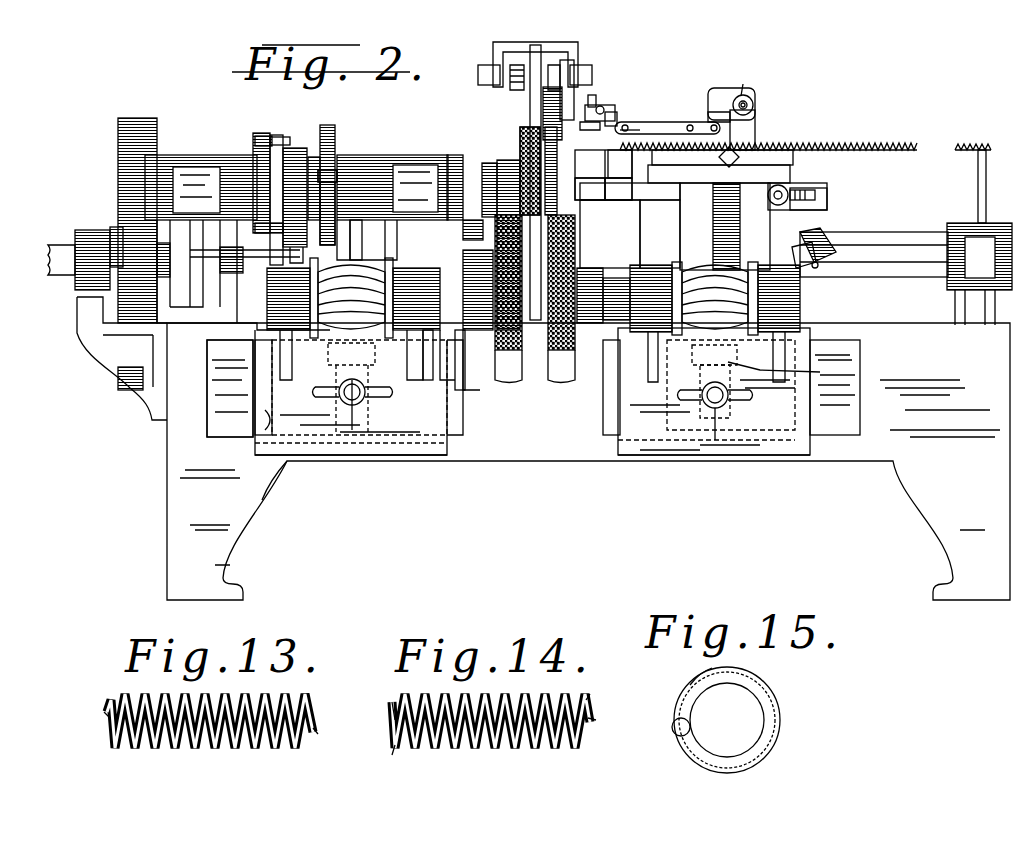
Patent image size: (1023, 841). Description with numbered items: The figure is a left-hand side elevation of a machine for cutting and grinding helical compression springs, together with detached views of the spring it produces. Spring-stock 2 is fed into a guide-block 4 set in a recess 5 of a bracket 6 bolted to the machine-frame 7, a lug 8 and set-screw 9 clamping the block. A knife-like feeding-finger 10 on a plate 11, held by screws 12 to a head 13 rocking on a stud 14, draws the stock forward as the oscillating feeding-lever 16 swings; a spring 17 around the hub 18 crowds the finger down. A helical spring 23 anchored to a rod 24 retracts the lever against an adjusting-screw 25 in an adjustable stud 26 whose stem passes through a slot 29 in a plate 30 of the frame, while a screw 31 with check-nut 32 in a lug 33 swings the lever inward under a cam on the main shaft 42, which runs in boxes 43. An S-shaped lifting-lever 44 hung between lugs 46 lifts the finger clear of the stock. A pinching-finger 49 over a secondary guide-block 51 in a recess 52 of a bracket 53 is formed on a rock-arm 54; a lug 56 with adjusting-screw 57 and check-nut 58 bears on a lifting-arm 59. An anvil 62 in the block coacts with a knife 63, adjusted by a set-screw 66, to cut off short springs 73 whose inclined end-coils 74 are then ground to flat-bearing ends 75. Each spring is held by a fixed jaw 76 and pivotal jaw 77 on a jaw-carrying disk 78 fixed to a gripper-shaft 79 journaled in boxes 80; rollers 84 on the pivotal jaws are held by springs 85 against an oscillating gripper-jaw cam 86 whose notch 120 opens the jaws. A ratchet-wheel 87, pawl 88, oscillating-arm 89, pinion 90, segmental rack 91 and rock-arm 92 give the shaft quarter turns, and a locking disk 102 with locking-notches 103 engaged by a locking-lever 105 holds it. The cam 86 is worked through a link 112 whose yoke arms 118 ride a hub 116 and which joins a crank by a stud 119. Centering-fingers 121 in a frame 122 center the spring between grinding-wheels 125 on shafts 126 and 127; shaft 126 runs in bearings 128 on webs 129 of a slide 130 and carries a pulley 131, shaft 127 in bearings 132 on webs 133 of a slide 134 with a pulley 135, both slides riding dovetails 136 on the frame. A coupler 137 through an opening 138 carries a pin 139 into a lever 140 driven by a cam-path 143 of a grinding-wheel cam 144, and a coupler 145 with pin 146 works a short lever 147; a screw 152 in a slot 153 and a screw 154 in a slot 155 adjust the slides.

In FIG. 2, the spring-stock 2 is at (820, 145).
In FIG. 2, the guide-block 4 is at (795, 157).
In FIG. 2, the recess 5 is at (792, 172).
In FIG. 2, the bracket 6 is at (725, 226).
In FIG. 2, the machine-frame 7 is at (900, 322).
In FIG. 2, the lug 8 is at (715, 165).
In FIG. 2, the set-screw 9 is at (735, 165).
In FIG. 2, the feeding-finger 10 is at (605, 125).
In FIG. 2, the horizontal plate 11 is at (641, 127).
In FIG. 2, the screws 12 is at (688, 125).
In FIG. 2, the head 13 is at (714, 90).
In FIG. 2, the stud 14 is at (750, 102).
In FIG. 2, the oscillating feeding-lever 16 is at (752, 125).
In FIG. 2, the spring 17 is at (748, 98).
In FIG. 2, the hub 18 is at (740, 88).
In FIG. 2, the helical spring 23 is at (972, 152).
In FIG. 2, the rod 24 is at (978, 180).
In FIG. 2, the adjusting-screw 25 is at (828, 200).
In FIG. 2, the adjustable stud 26 is at (780, 205).
In FIG. 2, the slot 29 is at (805, 202).
In FIG. 2, the plate or bar 30 is at (828, 188).
In FIG. 2, the screw 31 is at (800, 240).
In FIG. 2, the check-nut 32 is at (816, 270).
In FIG. 2, the lug 33 is at (796, 258).
In FIG. 2, the main shaft 42 is at (900, 240).
In FIG. 2, the boxes 43 is at (968, 235).
In FIG. 2, the lifting-lever 44 is at (705, 150).
In FIG. 2, the lugs 46 is at (680, 165).
In FIG. 2, the pinching-finger 49 is at (604, 108).
In FIG. 2, the secondary guide-block 51 is at (603, 175).
In FIG. 2, the recess 52 is at (590, 189).
In FIG. 2, the bracket 53 is at (630, 240).
In FIG. 2, the rock-arm 54 is at (600, 101).
In FIG. 2, the lug 56 is at (572, 68).
In FIG. 2, the adjusting-screw 57 is at (595, 92).
In FIG. 2, the check-nut 58 is at (615, 112).
In FIG. 2, the lifting-arm 59 is at (620, 164).
In FIG. 2, the anvil 62 is at (522, 160).
In FIG. 2, the knife 63 is at (522, 140).
In FIG. 2, the set-screw 66 is at (543, 102).
In FIG. 2, the short springs 73 is at (516, 64).
In FIG. 13, the short springs 73 is at (212, 748).
In FIG. 14, the short springs 73 is at (498, 748).
In FIG. 15, the short springs 73 is at (778, 710).
In FIG. 13, the end-coils 74 is at (106, 715).
In FIG. 14, the end-coils 74 is at (395, 748).
In FIG. 15, the end-coils 74 is at (700, 688).
In FIG. 14, the flat-bearing ends 75 is at (394, 722).
In FIG. 15, the flat-bearing ends 75 is at (672, 727).
In FIG. 2, the fixed jaw 76 is at (536, 62).
In FIG. 2, the pivotal jaw 77 is at (548, 70).
In FIG. 2, the jaw-carrying disk 78 is at (548, 130).
In FIG. 2, the gripper-shaft 79 is at (455, 155).
In FIG. 2, the boxes 80 is at (193, 165).
In FIG. 2, the anti-friction roller 84 is at (520, 150).
In FIG. 2, the springs 85 is at (608, 194).
In FIG. 2, the oscillating gripper-jaw cam 86 is at (375, 240).
In FIG. 2, the ratchet-wheel 87 is at (260, 165).
In FIG. 2, the pawl 88 is at (263, 136).
In FIG. 2, the oscillating-arm 89 is at (280, 135).
In FIG. 2, the oscillating pinion 90 is at (295, 150).
In FIG. 2, the segmental rack 91 is at (255, 188).
In FIG. 2, the rock-arm 92 is at (240, 248).
In FIG. 2, the gripper-locking disk 102 is at (333, 125).
In FIG. 2, the locking-notches 103 is at (336, 172).
In FIG. 2, the locking-lever 105 is at (280, 290).
In FIG. 2, the link 112 is at (468, 345).
In FIG. 2, the hub 116 is at (470, 340).
In FIG. 2, the arms 118 is at (500, 235).
In FIG. 2, the stud 119 is at (468, 375).
In FIG. 2, the notch 120 is at (485, 165).
In FIG. 2, the centering-fingers 121 is at (506, 72).
In FIG. 2, the frame 122 is at (494, 44).
In FIG. 2, the grinding-wheels 125 is at (545, 383).
In FIG. 2, the shaft 126 is at (430, 345).
In FIG. 2, the shaft 127 is at (600, 325).
In FIG. 2, the bearings 128 is at (300, 332).
In FIG. 2, the webs 129 is at (282, 350).
In FIG. 2, the horizontal slide 130 is at (322, 425).
In FIG. 2, the pulley 131 is at (303, 345).
In FIG. 2, the bearings 132 is at (650, 334).
In FIG. 2, the webs 133 is at (650, 345).
In FIG. 2, the horizontal slide 134 is at (690, 425).
In FIG. 2, the pulley 135 is at (390, 440).
In FIG. 2, the dovetails 136 is at (210, 405).
In FIG. 2, the angular coupler 137 is at (392, 392).
In FIG. 2, the opening 138 is at (280, 425).
In FIG. 2, the pin 139 is at (335, 360).
In FIG. 2, the lever 140 is at (330, 365).
In FIG. 2, the cam-path 143 is at (330, 240).
In FIG. 2, the grinding-wheel cam 144 is at (360, 220).
In FIG. 2, the angular coupler 145 is at (752, 392).
In FIG. 2, the pin 146 is at (822, 372).
In FIG. 2, the short lever 147 is at (695, 360).
In FIG. 2, the screw 152 is at (380, 400).
In FIG. 2, the slot 153 is at (330, 400).
In FIG. 2, the screw 154 is at (716, 410).
In FIG. 2, the horizontal slot 155 is at (745, 398).